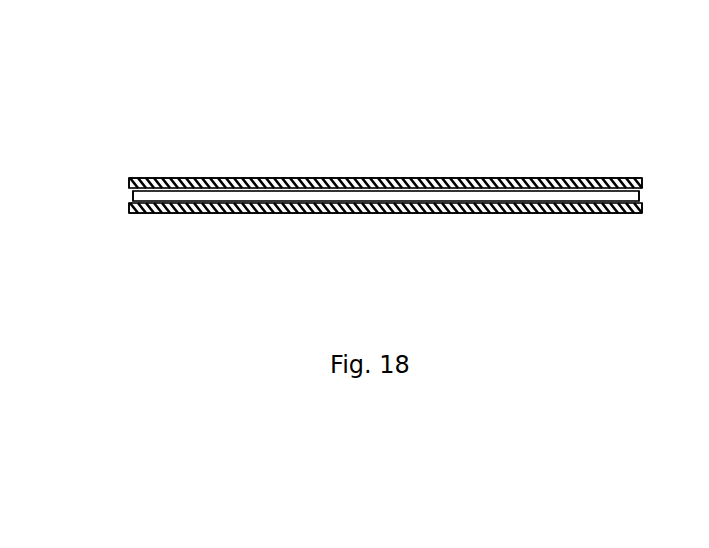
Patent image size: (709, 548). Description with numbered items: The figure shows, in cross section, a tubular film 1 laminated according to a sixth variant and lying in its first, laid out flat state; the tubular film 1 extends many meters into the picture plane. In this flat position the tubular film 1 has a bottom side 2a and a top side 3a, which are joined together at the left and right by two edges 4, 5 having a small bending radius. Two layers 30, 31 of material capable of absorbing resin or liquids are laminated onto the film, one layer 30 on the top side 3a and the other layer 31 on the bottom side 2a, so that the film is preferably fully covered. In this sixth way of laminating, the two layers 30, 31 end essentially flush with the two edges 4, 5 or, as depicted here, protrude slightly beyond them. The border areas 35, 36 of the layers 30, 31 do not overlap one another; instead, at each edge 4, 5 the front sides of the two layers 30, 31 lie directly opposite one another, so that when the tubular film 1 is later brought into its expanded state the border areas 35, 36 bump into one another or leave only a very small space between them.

The tubular film 1 is at (160, 178).
The bottom side 2a is at (289, 232).
The top side 3a is at (293, 158).
The edge 4 is at (131, 198).
The edge 5 is at (641, 198).
The layer 30 is at (393, 181).
The layer 31 is at (475, 214).
The border area 35 is at (137, 178).
The border area 36 is at (137, 214).